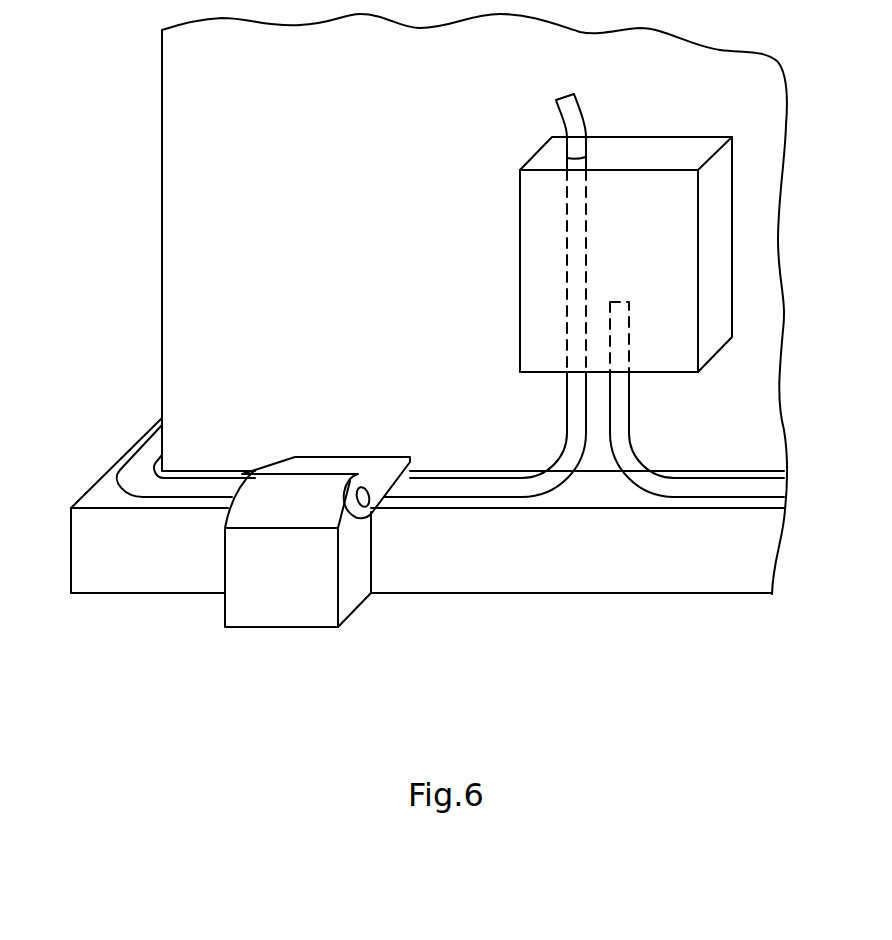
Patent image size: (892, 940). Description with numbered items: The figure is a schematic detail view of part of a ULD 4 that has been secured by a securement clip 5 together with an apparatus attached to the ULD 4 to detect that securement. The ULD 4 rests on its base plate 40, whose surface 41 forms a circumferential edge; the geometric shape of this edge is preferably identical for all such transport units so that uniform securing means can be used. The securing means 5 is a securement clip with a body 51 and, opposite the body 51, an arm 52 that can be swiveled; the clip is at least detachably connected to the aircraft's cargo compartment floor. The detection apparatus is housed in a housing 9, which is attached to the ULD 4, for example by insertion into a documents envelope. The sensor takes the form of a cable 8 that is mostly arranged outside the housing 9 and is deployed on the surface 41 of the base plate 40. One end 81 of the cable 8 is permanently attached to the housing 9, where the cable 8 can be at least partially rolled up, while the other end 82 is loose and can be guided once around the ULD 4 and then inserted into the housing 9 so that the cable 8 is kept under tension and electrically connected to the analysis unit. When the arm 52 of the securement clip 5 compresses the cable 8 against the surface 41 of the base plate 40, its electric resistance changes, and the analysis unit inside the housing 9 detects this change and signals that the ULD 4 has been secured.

The ULD 4 is at (180, 322).
The base plate 40 is at (115, 572).
The surface 41 is at (97, 495).
The securing means 5 is at (317, 566).
The body 51 is at (352, 590).
The arm 52 is at (350, 465).
The cable 8 is at (577, 410).
The end 81 is at (622, 350).
The end 82 is at (573, 123).
The housing 9 is at (685, 150).